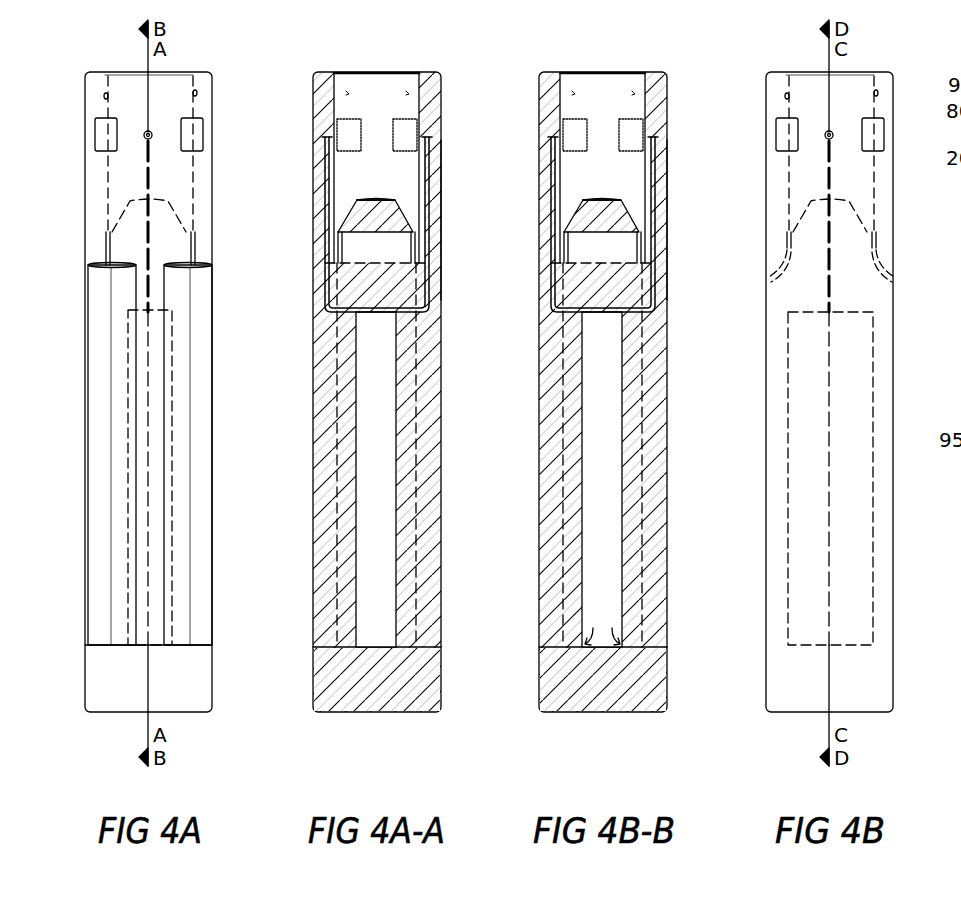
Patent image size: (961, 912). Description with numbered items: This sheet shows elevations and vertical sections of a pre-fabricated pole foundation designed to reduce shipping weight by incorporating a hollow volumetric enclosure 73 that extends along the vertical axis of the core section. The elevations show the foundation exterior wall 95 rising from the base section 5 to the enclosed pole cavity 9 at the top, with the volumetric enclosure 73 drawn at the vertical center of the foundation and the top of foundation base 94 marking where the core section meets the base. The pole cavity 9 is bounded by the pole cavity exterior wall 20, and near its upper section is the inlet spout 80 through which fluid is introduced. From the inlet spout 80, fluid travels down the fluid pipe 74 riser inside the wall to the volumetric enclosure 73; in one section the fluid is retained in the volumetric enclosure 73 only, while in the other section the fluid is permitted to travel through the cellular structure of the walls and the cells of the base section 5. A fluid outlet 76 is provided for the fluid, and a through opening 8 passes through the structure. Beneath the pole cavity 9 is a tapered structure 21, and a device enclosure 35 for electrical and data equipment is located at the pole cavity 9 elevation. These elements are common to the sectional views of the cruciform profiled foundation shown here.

In FIG. 4A, the base section 5 is at (190, 673).
In FIG. 4A-A, the base section 5 is at (418, 675).
In FIG. 4B-B, the base section 5 is at (628, 679).
In FIG. 4B, the base section 5 is at (906, 678).
In FIG. 4A, the through opening 8 is at (190, 258).
In FIG. 4A-A, the through opening 8 is at (420, 260).
In FIG. 4B-B, the through opening 8 is at (633, 263).
In FIG. 4B, the through opening 8 is at (854, 257).
In FIG. 4A, the pole cavity 9 is at (130, 106).
In FIG. 4A-A, the pole cavity 9 is at (353, 81).
In FIG. 4B-B, the pole cavity 9 is at (568, 84).
In FIG. 4B, the pole cavity 9 is at (805, 103).
In FIG. 4A, the pole cavity exterior wall 20 is at (108, 170).
In FIG. 4A-A, the pole cavity exterior wall 20 is at (331, 160).
In FIG. 4B-B, the pole cavity exterior wall 20 is at (576, 224).
In FIG. 4B, the pole cavity exterior wall 20 is at (798, 153).
In FIG. 4A, the tapered structure 21 is at (176, 217).
In FIG. 4A-A, the tapered structure 21 is at (397, 214).
In FIG. 4B-B, the tapered structure 21 is at (638, 231).
In FIG. 4B, the tapered structure 21 is at (872, 215).
In FIG. 4A, the device enclosure 35 is at (194, 134).
In FIG. 4A-A, the device enclosure 35 is at (403, 119).
In FIG. 4B-B, the device enclosure 35 is at (638, 121).
In FIG. 4B, the device enclosure 35 is at (863, 134).
In FIG. 4A, the volumetric enclosure 73 is at (172, 516).
In FIG. 4A-A, the volumetric enclosure 73 is at (398, 516).
In FIG. 4B-B, the volumetric enclosure 73 is at (650, 479).
In FIG. 4B, the volumetric enclosure 73 is at (869, 478).
In FIG. 4A-A, the fluid pipe 74 is at (430, 175).
In FIG. 4B-B, the fluid pipe 74 is at (684, 220).
In FIG. 4A, the fluid outlet 76 is at (151, 139).
In FIG. 4A-A, the fluid outlet 76 is at (434, 134).
In FIG. 4B-B, the fluid outlet 76 is at (680, 138).
In FIG. 4B, the fluid outlet 76 is at (888, 165).
In FIG. 4A-A, the inlet spout 80 is at (319, 136).
In FIG. 4B-B, the inlet spout 80 is at (527, 118).
In FIG. 4A, the top of foundation base 94 is at (190, 585).
In FIG. 4A-A, the top of foundation base 94 is at (418, 586).
In FIG. 4B-B, the top of foundation base 94 is at (641, 454).
In FIG. 4B, the top of foundation base 94 is at (902, 586).
In FIG. 4A, the foundation exterior wall 95 is at (85, 437).
In FIG. 4A-A, the foundation exterior wall 95 is at (313, 437).
In FIG. 4B-B, the foundation exterior wall 95 is at (577, 392).
In FIG. 4B, the foundation exterior wall 95 is at (804, 392).